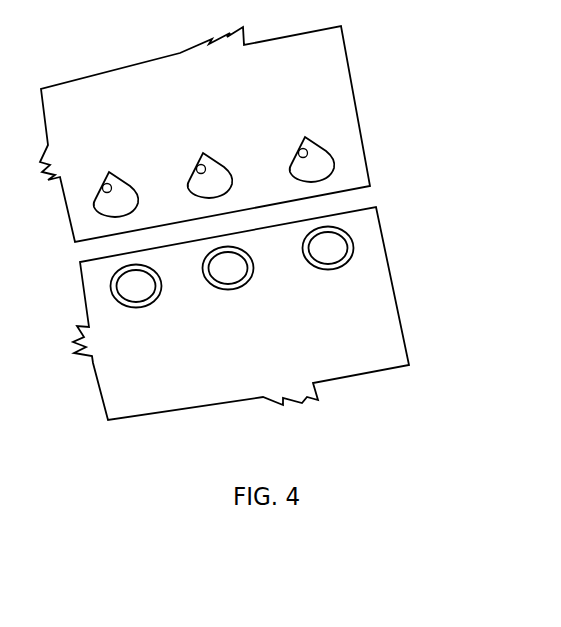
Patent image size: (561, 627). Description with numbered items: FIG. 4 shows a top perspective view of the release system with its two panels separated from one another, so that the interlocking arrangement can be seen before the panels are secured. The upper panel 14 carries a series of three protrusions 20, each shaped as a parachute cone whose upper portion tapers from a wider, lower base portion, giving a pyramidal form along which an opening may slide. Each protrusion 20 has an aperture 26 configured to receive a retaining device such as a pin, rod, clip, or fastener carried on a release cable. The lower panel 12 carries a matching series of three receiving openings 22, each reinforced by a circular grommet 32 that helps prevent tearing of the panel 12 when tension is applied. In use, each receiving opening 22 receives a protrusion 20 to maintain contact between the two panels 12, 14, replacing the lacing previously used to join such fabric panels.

The panel 12 is at (273, 366).
The panel 14 is at (209, 117).
The protrusion 20 is at (317, 173).
The aperture 26 is at (303, 153).
The receiving opening 22 is at (332, 247).
The grommet 32 is at (345, 260).